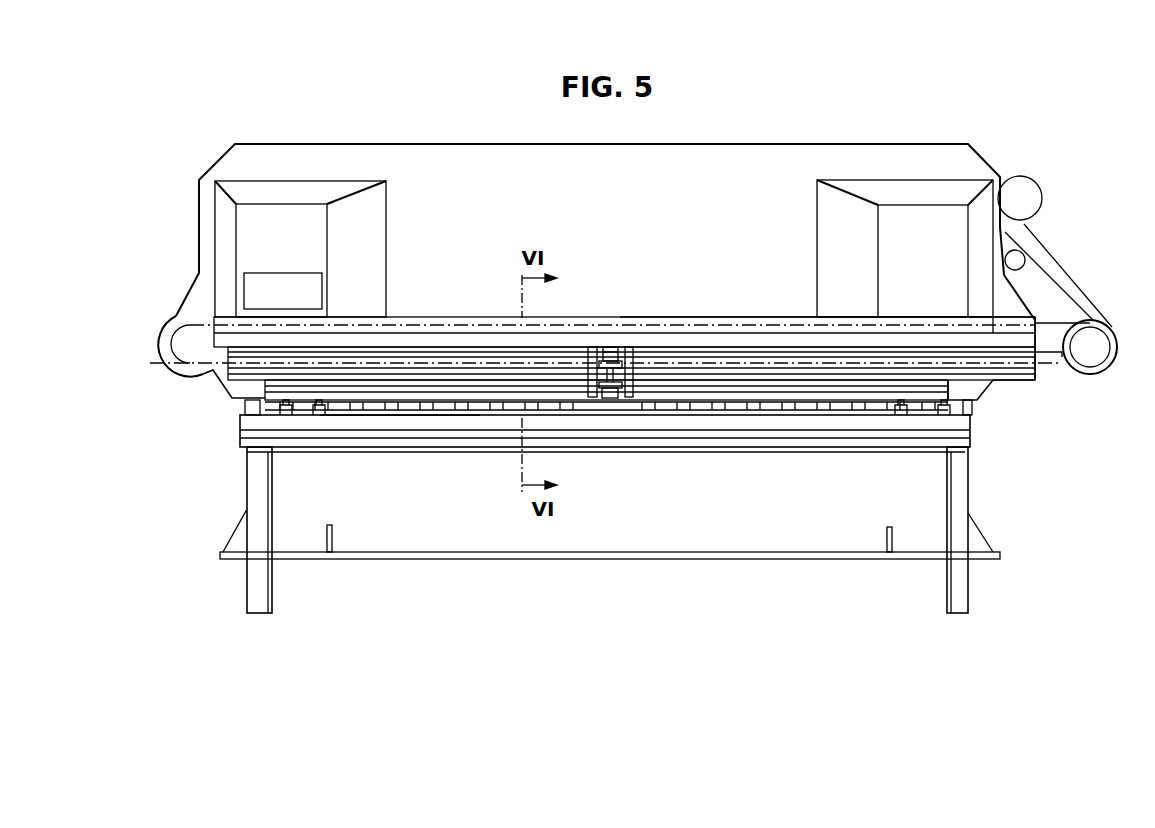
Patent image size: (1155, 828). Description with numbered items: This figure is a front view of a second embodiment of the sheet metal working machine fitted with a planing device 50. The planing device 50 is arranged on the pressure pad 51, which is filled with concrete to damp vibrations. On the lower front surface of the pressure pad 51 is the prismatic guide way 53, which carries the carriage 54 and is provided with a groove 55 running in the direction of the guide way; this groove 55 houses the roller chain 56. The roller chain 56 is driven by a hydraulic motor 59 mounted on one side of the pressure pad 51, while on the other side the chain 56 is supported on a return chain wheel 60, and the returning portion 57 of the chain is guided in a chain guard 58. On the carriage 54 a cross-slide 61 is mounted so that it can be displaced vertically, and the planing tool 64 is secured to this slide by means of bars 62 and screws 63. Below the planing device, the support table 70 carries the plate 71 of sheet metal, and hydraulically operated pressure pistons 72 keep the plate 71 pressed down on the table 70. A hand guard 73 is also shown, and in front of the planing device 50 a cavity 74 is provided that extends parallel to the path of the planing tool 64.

The planing device 50 is at (643, 356).
The pressure pad 51 is at (740, 165).
The prismatic guide way 53 is at (1028, 378).
The carriage 54 is at (630, 352).
The groove 55 is at (995, 370).
The roller chain 56 is at (232, 398).
The returning portion of chain 57 is at (466, 318).
The chain guard 58 is at (750, 318).
The hydraulic motor 59 is at (157, 362).
The return chain wheel 60 is at (1108, 332).
The cross-slide 61 is at (633, 380).
The bars 62 is at (593, 388).
The screws 63 is at (593, 350).
The planing tool 64 is at (612, 398).
The support table 70 is at (842, 438).
The plate 71 is at (773, 410).
The pressure pistons 72 is at (903, 412).
The hand guard 73 is at (440, 425).
The cavity 74 is at (360, 425).